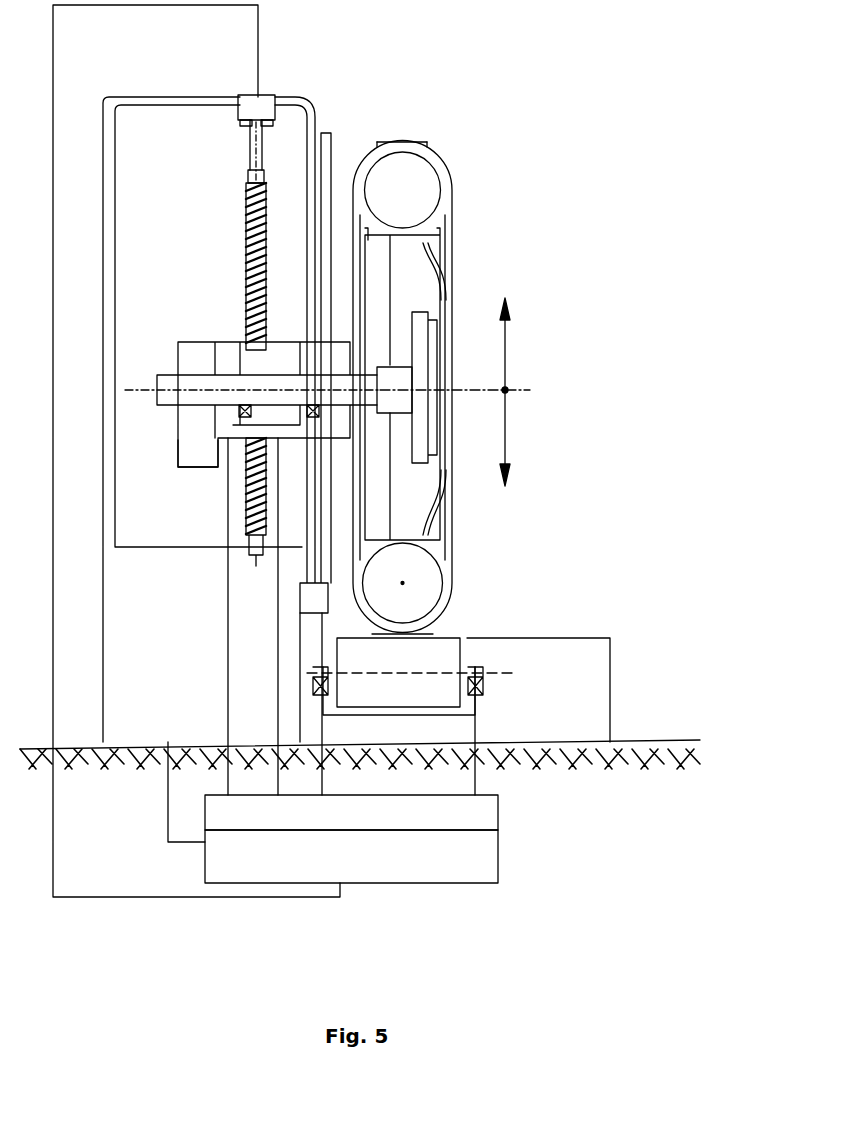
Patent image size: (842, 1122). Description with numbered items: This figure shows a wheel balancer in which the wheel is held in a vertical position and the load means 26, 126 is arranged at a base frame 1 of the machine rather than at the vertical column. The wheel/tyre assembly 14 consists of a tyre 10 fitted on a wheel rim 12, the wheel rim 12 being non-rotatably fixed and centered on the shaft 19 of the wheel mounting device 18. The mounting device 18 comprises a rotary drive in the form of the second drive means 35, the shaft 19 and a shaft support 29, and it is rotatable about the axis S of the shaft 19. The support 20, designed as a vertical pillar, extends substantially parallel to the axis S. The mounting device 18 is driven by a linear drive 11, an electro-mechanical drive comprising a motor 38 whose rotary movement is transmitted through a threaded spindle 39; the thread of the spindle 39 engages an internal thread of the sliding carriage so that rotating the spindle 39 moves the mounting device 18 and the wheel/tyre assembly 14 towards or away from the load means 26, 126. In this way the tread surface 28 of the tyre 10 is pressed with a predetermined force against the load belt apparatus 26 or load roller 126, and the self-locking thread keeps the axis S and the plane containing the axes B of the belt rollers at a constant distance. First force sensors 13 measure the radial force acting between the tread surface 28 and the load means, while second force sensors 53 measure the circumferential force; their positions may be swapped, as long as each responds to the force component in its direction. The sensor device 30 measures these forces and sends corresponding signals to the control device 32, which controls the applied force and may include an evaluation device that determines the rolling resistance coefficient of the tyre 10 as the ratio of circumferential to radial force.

The base / foundation 1 is at (578, 646).
The tyre 10 is at (444, 168).
The linear drive 11 is at (248, 170).
The wheel rim 12 is at (430, 255).
The first force sensors 13 is at (313, 685).
The wheel/tyre assembly 14 is at (471, 353).
The mounting device 18 is at (193, 357).
The shaft 19 is at (400, 372).
The support 20 is at (165, 97).
The load belt apparatus 26 is at (427, 623).
The load roller 126 is at (447, 632).
The tread surface 28 is at (402, 140).
The shaft support 29 is at (345, 367).
The sensor device 30 is at (351, 812).
The control device 32 is at (351, 856).
The second drive means 35 is at (200, 448).
The motor 38 is at (258, 97).
The threaded spindle 39 is at (246, 238).
The second force sensors 53 is at (243, 405).
The axis S is at (465, 392).
The axes of the belt rollers B is at (410, 678).